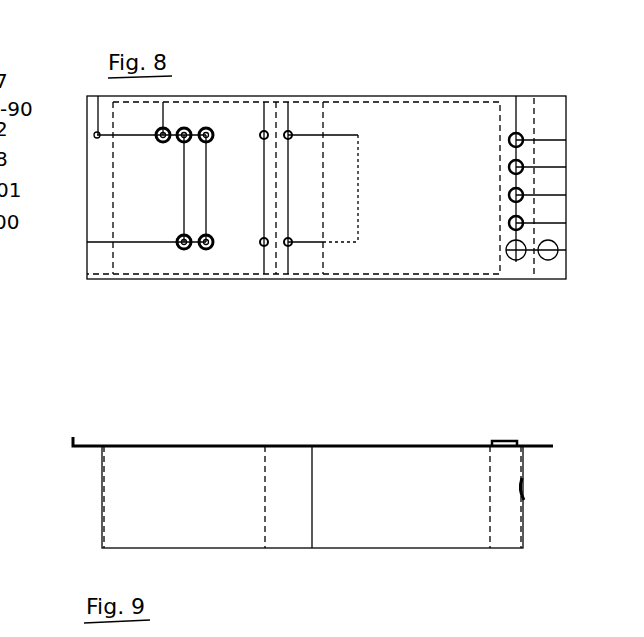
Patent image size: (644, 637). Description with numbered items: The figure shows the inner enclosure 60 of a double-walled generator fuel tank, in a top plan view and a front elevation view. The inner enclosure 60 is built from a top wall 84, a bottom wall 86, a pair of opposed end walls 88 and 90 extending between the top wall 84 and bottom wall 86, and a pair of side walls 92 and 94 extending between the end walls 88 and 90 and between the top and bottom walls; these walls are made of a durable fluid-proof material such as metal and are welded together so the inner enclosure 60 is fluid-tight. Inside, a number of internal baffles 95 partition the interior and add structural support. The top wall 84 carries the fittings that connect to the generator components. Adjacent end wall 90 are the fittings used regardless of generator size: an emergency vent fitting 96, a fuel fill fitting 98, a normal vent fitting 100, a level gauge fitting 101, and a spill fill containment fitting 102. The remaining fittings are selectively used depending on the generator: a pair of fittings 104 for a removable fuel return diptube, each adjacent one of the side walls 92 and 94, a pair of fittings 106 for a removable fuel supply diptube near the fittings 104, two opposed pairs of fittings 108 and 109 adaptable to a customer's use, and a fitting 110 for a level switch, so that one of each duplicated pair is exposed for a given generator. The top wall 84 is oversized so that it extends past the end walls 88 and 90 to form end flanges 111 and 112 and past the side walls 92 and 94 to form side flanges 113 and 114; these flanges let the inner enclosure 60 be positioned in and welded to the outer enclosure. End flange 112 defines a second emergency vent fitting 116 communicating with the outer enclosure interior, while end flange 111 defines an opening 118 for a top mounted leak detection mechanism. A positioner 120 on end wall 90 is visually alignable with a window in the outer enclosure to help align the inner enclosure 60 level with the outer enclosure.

In FIG. 8, the inner enclosure 60 is at (391, 81).
In FIG. 9, the inner enclosure 60 is at (160, 444).
In FIG. 8, the top wall 84 is at (435, 108).
In FIG. 9, the top wall 84 is at (410, 443).
In FIG. 9, the bottom wall 86 is at (400, 550).
In FIG. 9, the end wall 88 is at (94, 532).
In FIG. 8, the end wall 90 is at (310, 187).
In FIG. 9, the end wall 90 is at (525, 533).
In FIG. 8, the side wall 92 is at (243, 280).
In FIG. 8, the side wall 94 is at (407, 98).
In FIG. 9, the internal baffle 95 is at (263, 521).
In FIG. 8, the emergency vent fitting 96 is at (514, 262).
In FIG. 9, the emergency vent fitting 96 is at (495, 440).
In FIG. 8, the fuel fill fitting 98 is at (522, 170).
In FIG. 8, the normal vent fitting 100 is at (522, 222).
In FIG. 8, the level gauge fitting 101 is at (522, 200).
In FIG. 8, the spill fill containment fitting 102 is at (507, 128).
In FIG. 8, the fitting for removable fuel return diptube 104 is at (271, 124).
In FIG. 8, the fitting for fuel supply diptube 106 is at (291, 122).
In FIG. 8, the customer-use fitting 108 is at (208, 128).
In FIG. 8, the customer-use fitting 109 is at (184, 128).
In FIG. 8, the level switch fitting 110 is at (166, 129).
In FIG. 8, the end flange 111 is at (88, 100).
In FIG. 9, the end flange 111 is at (85, 440).
In FIG. 8, the end flange 112 is at (552, 104).
In FIG. 9, the end flange 112 is at (540, 443).
In FIG. 8, the side flange 113 is at (358, 96).
In FIG. 8, the side flange 114 is at (403, 280).
In FIG. 8, the second emergency vent fitting 116 is at (548, 262).
In FIG. 8, the opening 118 is at (89, 134).
In FIG. 9, the positioner 120 is at (522, 480).